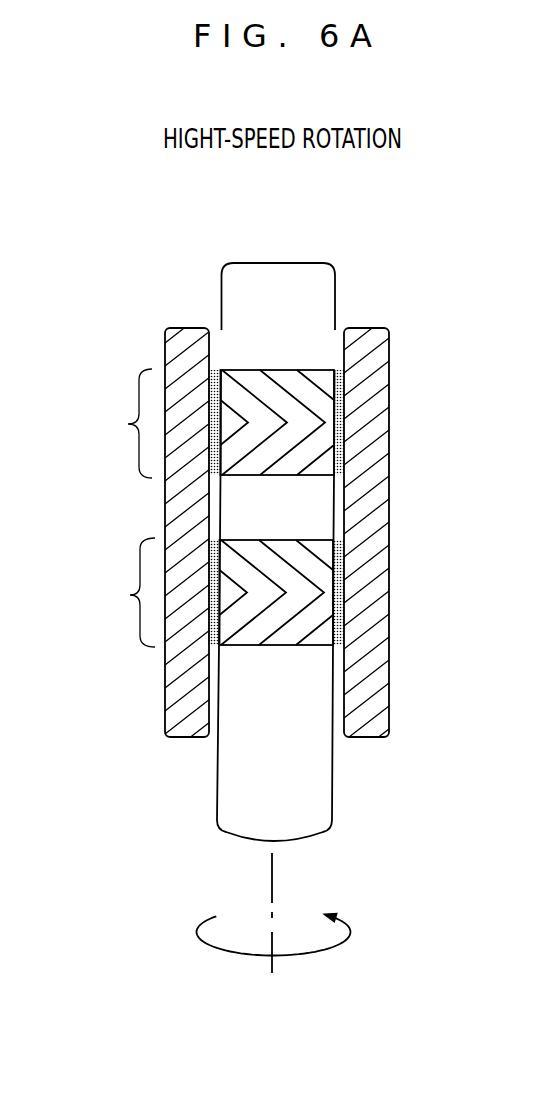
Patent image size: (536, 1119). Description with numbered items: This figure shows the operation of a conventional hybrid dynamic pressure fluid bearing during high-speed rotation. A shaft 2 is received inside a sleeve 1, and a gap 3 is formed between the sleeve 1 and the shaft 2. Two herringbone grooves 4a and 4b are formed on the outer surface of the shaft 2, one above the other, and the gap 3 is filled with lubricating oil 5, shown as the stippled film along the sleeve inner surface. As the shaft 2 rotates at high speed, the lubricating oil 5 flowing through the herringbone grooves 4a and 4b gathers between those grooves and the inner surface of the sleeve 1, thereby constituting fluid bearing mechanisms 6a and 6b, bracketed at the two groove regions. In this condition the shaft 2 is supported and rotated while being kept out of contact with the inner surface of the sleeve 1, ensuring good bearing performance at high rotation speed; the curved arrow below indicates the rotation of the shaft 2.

The sleeve 1 is at (373, 347).
The shaft 2 is at (307, 305).
The gap 3 is at (217, 335).
The herringbone groove 4a is at (290, 467).
The herringbone groove 4b is at (272, 640).
The lubricating oil 5 is at (213, 478).
The fluid bearing mechanism 6a is at (128, 424).
The fluid bearing mechanism 6b is at (132, 595).